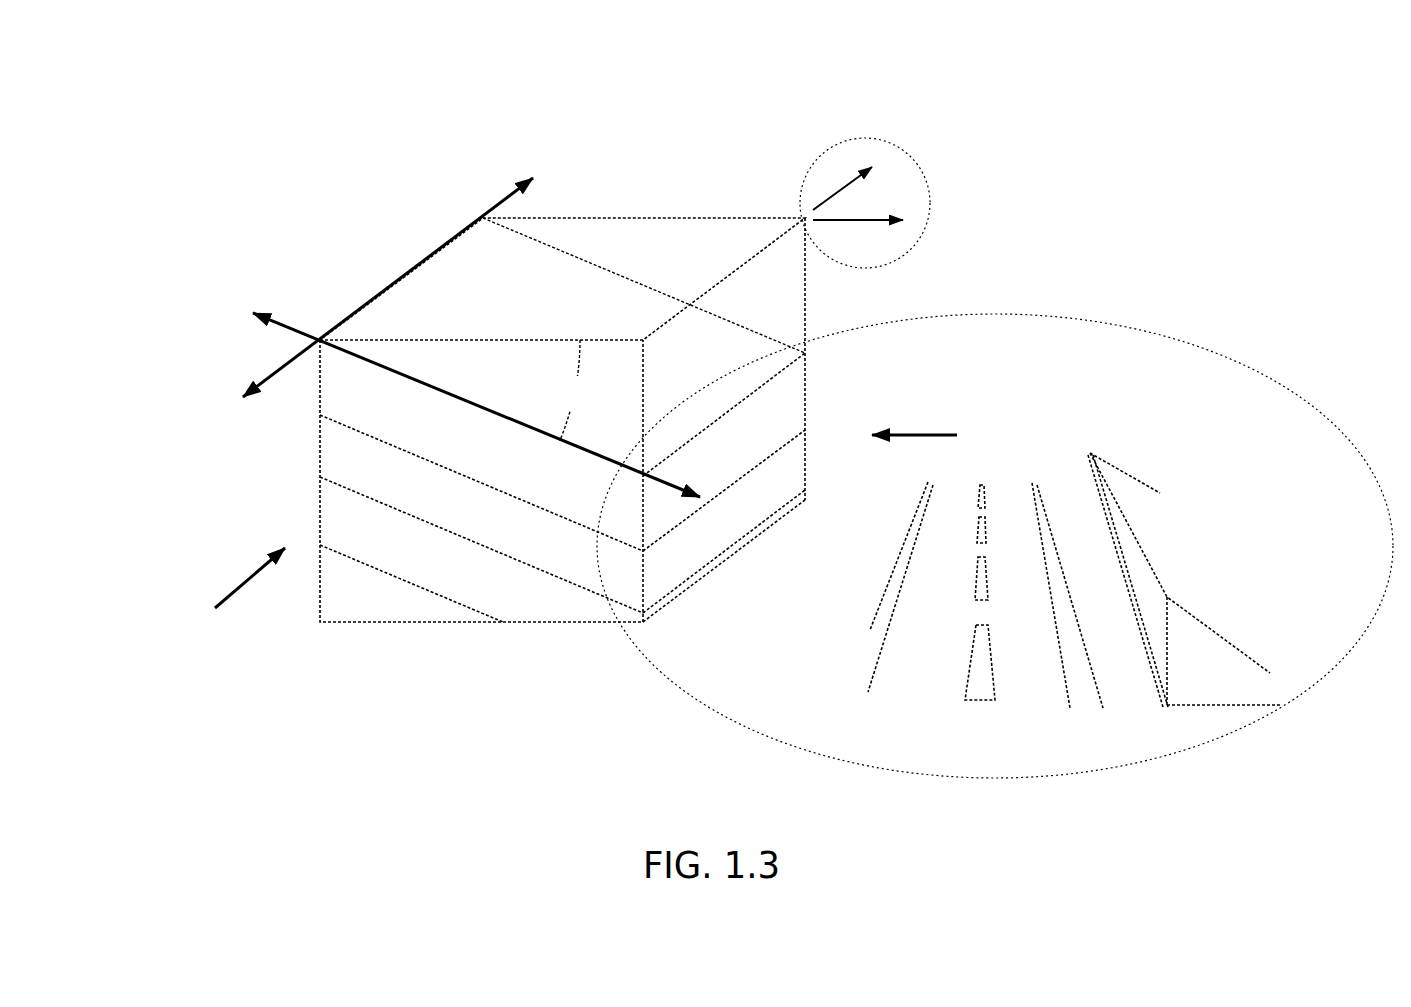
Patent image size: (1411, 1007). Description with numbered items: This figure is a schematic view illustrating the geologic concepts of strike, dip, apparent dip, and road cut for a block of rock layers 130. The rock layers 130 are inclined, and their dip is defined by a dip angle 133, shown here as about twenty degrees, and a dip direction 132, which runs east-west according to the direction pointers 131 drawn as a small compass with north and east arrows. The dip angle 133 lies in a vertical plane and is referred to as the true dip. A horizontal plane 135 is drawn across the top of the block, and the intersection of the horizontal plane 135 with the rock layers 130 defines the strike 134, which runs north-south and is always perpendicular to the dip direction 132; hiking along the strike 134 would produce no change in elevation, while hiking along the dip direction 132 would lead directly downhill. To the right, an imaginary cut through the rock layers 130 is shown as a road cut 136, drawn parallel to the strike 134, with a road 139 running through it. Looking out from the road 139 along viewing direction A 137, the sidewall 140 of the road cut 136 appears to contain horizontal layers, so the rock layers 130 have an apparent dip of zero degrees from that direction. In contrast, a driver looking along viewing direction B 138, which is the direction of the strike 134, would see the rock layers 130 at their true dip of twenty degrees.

The rock layers 130 is at (485, 633).
The direction pointers 131 is at (922, 170).
The dip direction 132 is at (417, 375).
The dip angle 133 is at (560, 387).
The strike 134 is at (493, 197).
The horizontal plane 135 is at (648, 212).
The road cut 136 is at (1153, 335).
The viewing direction A 137 is at (922, 430).
The viewing direction B 138 is at (248, 572).
The road 139 is at (972, 733).
The sidewall 140 is at (785, 400).